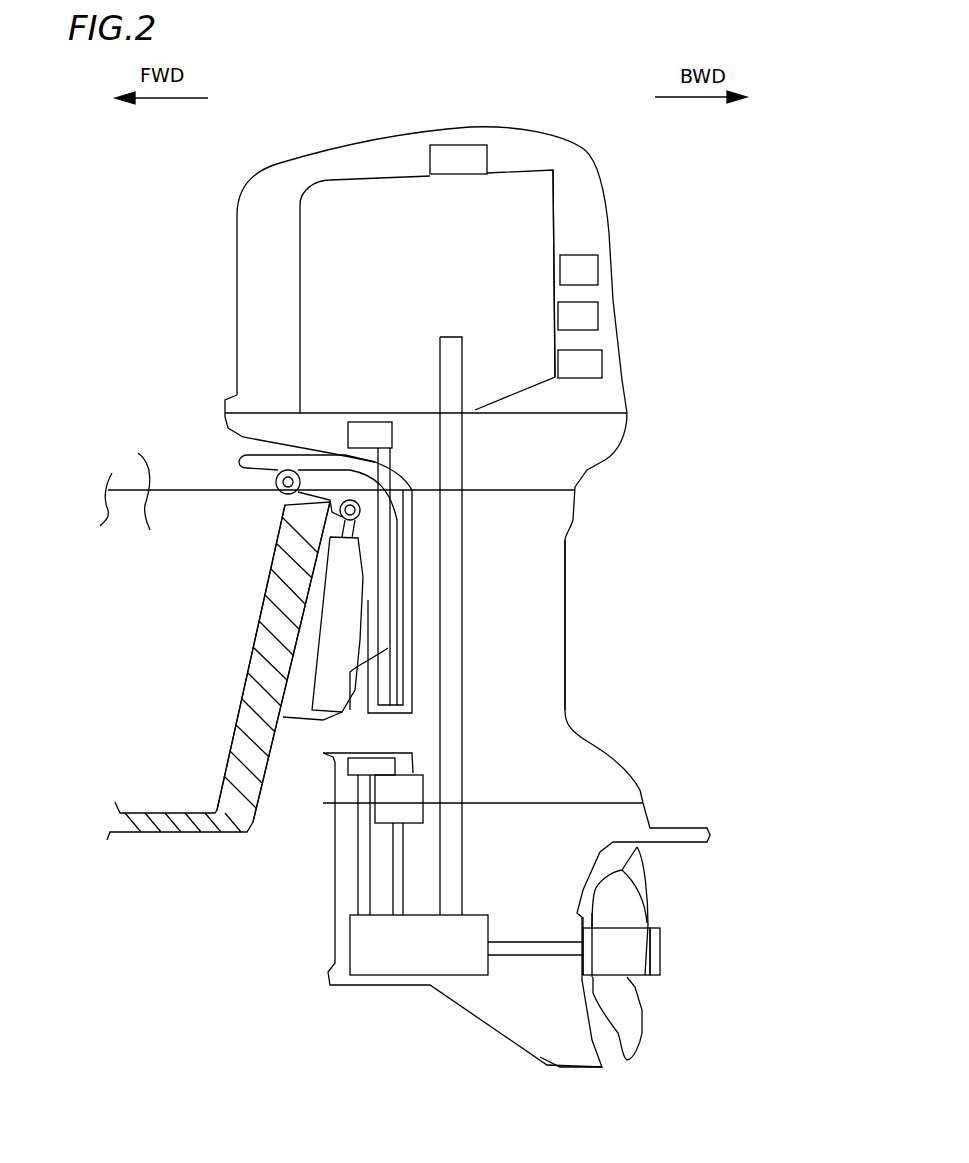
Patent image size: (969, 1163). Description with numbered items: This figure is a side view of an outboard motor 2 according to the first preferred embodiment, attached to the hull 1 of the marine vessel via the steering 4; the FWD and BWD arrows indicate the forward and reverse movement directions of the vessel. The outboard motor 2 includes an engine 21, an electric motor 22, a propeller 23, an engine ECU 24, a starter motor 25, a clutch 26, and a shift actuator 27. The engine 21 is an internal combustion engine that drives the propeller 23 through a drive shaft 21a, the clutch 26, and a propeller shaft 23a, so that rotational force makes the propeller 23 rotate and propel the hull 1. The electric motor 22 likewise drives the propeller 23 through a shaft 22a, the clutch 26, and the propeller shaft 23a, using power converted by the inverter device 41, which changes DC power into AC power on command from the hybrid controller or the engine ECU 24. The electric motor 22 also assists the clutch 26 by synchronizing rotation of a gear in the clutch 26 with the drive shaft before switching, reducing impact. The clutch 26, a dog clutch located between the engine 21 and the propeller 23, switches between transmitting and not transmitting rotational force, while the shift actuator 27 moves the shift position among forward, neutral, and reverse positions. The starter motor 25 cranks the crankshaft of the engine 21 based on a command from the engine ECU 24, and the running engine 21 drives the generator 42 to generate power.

The hull 1 is at (215, 642).
The outboard motor 2 is at (629, 148).
The steering 4 is at (317, 597).
The engine 21 is at (553, 195).
The drive shaft 21a is at (462, 595).
The electric motor 22 is at (408, 747).
The shaft 22a is at (400, 853).
The propeller 23 is at (645, 998).
The propeller shaft 23a is at (522, 957).
The engine ECU 24 is at (575, 315).
The starter motor 25 is at (575, 268).
The clutch 26 is at (427, 987).
The shift actuator 27 is at (371, 420).
The inverter device 41 is at (578, 362).
The generator 42 is at (450, 158).